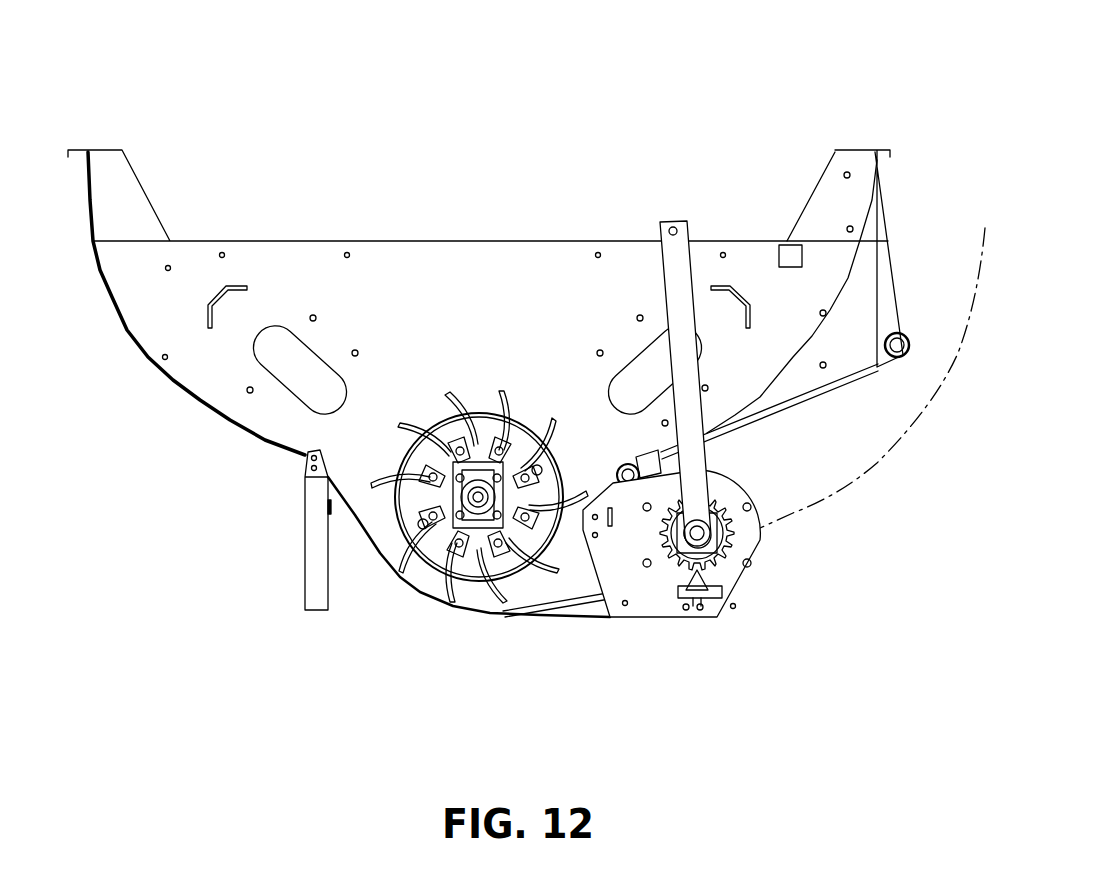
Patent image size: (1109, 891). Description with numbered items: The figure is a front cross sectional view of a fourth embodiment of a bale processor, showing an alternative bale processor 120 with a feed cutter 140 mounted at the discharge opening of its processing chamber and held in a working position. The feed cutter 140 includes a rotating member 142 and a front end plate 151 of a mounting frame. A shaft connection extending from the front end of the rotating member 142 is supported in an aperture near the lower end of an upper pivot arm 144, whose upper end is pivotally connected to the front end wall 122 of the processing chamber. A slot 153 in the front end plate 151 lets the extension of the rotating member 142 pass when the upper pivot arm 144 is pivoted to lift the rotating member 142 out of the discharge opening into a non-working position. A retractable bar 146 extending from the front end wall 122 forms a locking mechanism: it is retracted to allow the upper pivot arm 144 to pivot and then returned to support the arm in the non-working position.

The alternative bale processor 120 is at (384, 94).
The front end wall 122 is at (445, 340).
The feed cutter 140 is at (792, 597).
The rotating member 142 is at (737, 488).
The upper pivot arm 144 is at (660, 277).
The retractable bar 146 is at (790, 257).
The front end plate 151 is at (733, 592).
The slot 153 is at (705, 532).